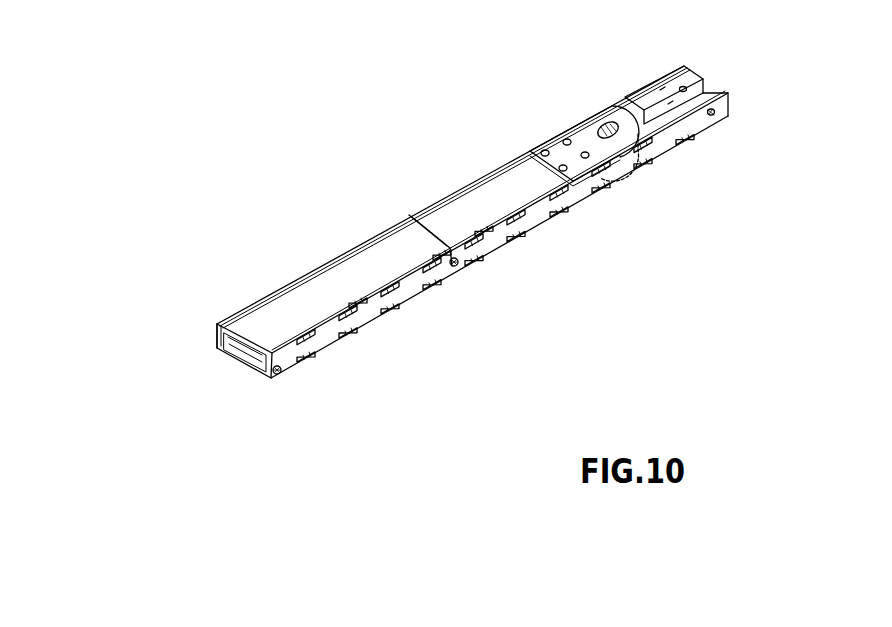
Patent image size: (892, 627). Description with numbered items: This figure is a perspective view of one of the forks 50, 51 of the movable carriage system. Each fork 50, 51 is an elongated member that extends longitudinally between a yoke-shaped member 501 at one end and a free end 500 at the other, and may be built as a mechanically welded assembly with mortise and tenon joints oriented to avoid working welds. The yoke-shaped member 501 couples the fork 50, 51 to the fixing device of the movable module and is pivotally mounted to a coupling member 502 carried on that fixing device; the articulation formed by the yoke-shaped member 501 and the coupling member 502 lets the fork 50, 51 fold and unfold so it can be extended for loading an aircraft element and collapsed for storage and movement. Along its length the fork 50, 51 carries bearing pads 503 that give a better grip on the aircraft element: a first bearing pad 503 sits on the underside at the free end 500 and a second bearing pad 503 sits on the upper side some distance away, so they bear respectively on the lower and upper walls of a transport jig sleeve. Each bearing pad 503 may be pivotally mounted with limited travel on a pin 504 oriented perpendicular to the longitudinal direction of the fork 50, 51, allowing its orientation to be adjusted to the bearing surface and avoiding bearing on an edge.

The fork 50 is at (430, 240).
The fork 51 is at (410, 240).
The free end 500 is at (216, 345).
The yoke-shaped member 501 is at (603, 105).
The coupling member 502 is at (676, 69).
The bearing pad 503 is at (447, 238).
The pin 504 is at (279, 386).